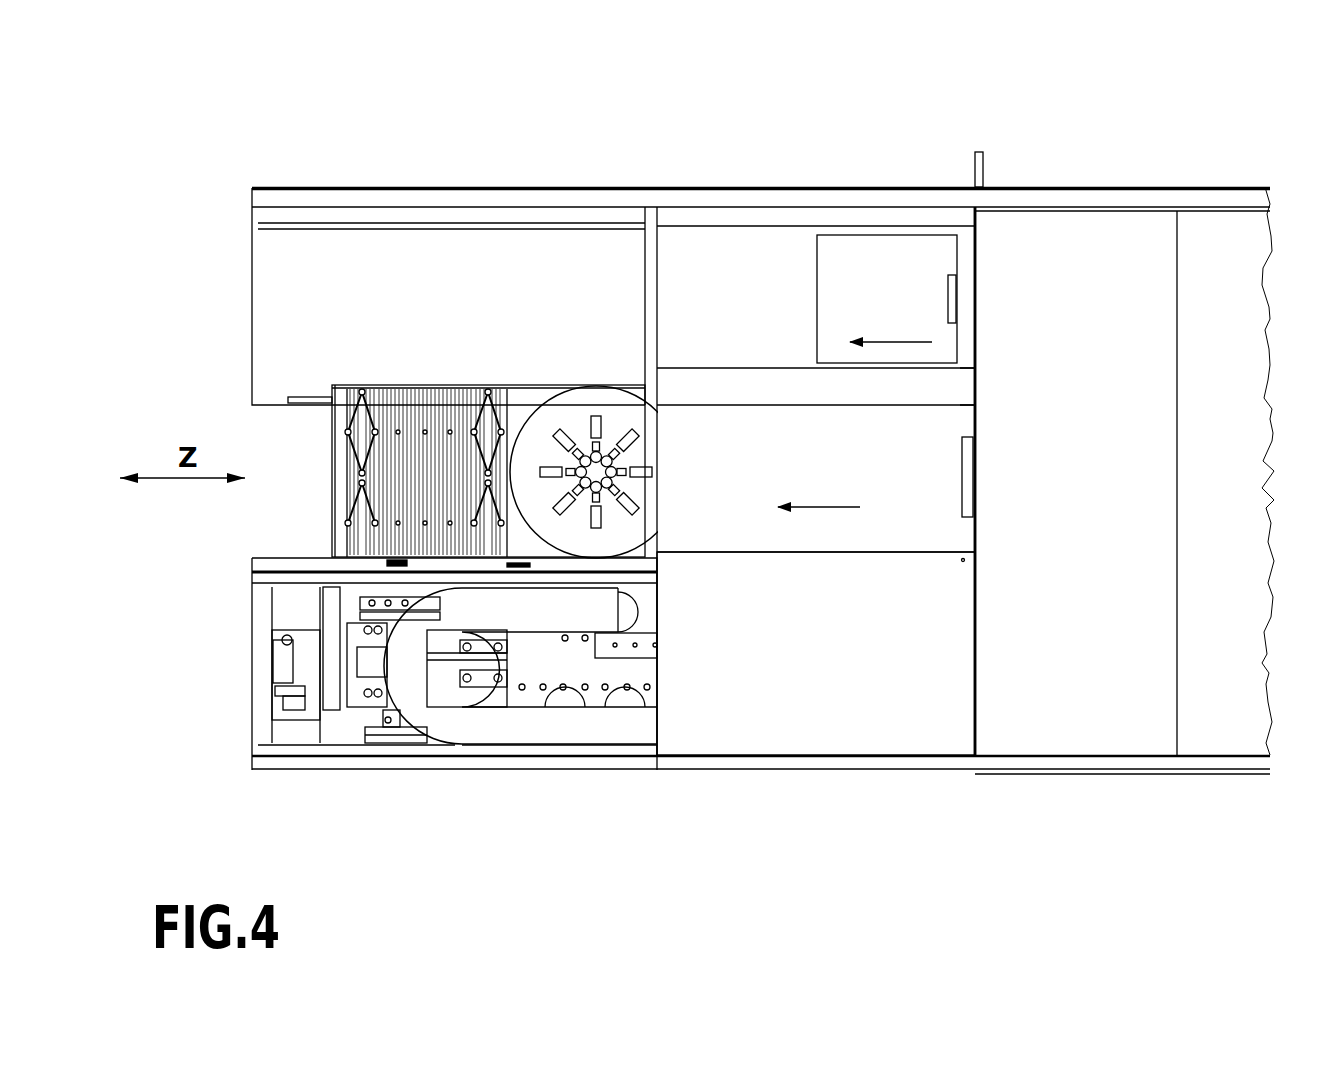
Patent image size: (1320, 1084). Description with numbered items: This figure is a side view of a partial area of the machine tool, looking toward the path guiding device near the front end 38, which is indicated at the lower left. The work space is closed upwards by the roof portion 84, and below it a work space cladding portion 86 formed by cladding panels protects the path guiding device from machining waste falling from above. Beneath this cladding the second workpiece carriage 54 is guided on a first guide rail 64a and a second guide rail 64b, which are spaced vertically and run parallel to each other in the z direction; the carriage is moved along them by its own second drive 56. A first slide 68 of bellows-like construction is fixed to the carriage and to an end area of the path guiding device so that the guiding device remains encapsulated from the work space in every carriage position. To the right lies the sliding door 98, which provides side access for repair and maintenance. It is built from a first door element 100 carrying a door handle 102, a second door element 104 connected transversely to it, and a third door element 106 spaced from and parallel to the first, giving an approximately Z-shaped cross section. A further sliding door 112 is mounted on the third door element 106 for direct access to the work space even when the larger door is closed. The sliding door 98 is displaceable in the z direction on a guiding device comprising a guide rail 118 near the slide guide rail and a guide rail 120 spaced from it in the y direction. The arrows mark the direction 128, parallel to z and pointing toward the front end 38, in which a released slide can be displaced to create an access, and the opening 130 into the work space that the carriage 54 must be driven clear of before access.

The front end 38 is at (228, 722).
The second workpiece carriage 54 is at (605, 403).
The second drive 56 is at (302, 660).
The first guide rail 64a is at (367, 609).
The second guide rail 64b is at (388, 727).
The first slide 68 is at (388, 522).
The roof portion 84 is at (490, 187).
The work space cladding portion 86 is at (312, 333).
The sliding door 98 is at (735, 272).
The first door element 100 is at (960, 542).
The door handle 102 is at (967, 477).
The second door element 104 is at (967, 383).
The third door element 106 is at (967, 270).
The sliding door 112 is at (917, 235).
The guide rail 118 is at (398, 387).
The guide rail 120 is at (533, 562).
The direction 128 is at (903, 342).
The opening 130 is at (750, 462).